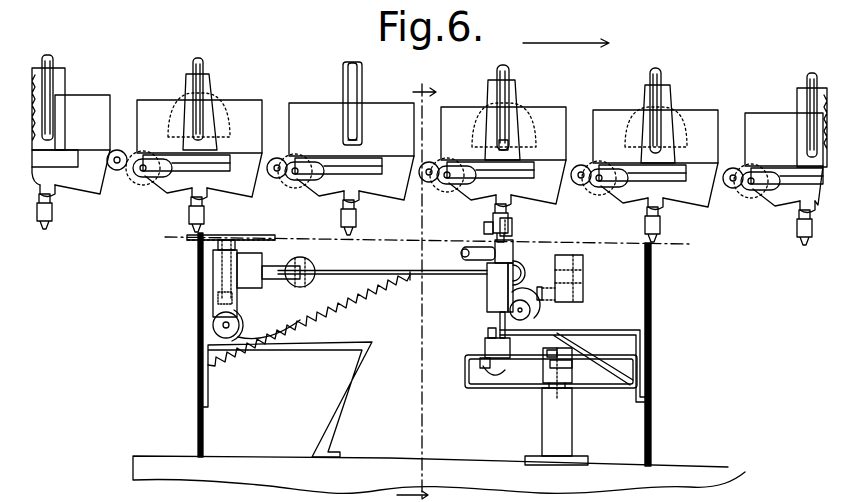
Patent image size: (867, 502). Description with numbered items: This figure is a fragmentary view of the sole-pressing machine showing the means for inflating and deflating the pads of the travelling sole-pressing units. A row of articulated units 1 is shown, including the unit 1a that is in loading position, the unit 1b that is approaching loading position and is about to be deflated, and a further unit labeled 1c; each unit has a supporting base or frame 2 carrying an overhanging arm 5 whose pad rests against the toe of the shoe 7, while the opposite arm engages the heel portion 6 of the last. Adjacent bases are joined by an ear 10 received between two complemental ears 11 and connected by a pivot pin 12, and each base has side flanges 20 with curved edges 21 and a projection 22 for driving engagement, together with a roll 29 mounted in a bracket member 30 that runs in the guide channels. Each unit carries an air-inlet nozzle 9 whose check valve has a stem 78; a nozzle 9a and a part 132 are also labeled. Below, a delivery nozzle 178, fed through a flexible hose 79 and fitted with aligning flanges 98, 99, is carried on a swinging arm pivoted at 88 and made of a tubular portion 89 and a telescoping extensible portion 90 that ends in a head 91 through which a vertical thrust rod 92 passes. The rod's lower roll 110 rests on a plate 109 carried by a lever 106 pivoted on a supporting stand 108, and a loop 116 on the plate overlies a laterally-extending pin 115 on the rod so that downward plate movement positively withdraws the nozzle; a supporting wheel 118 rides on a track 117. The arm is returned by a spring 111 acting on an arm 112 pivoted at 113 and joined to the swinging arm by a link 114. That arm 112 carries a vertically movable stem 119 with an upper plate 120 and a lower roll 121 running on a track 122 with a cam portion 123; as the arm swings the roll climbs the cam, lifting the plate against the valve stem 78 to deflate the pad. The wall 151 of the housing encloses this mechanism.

The sole-pressing unit 1 is at (240, 102).
The sole-pressing unit in loading position 1a is at (562, 113).
The sole-pressing unit approaching loading position 1b is at (228, 103).
The carrier box 1c is at (370, 108).
The supporting base or frame 2 is at (763, 150).
The overhanging arm 5 is at (203, 67).
The heel portion of last 6 is at (58, 82).
The shoe 7 is at (166, 237).
The air-inlet nozzle 9 is at (52, 217).
The nozzle 9a is at (492, 220).
The ear 10 is at (282, 163).
The complemental ears 11 is at (288, 152).
The pivot pin 12 is at (277, 160).
The flange 20 is at (165, 190).
The flange edge 21 is at (170, 192).
The projection 22 is at (192, 193).
The roll 29 is at (137, 181).
The bracket member 30 is at (225, 160).
The valve stem 78 is at (199, 244).
The flexible hose 79 is at (470, 256).
The pivot 88 is at (584, 258).
The tubular portion 89 is at (584, 284).
The extensible portion 90 is at (522, 270).
The head 91 is at (488, 285).
The thrust rod 92 is at (497, 315).
The aligning flange 98 is at (512, 231).
The aligning flange 99 is at (484, 231).
The lever 106 is at (545, 380).
The supporting stand 108 is at (546, 433).
The plate 109 is at (545, 385).
The roll 110 is at (505, 382).
The spring 111 is at (345, 313).
The arm 112 is at (258, 275).
The pivot 113 is at (302, 262).
The link 114 is at (382, 265).
The laterally-extending pin 115 is at (467, 368).
The loop 116 is at (486, 348).
The track or support 117 is at (582, 332).
The supporting wheel 118 is at (532, 312).
The stem 119 is at (216, 246).
The plate 120 is at (246, 240).
The roll 121 is at (242, 321).
The track 122 is at (322, 342).
The cam portion 123 is at (266, 335).
The arm 132 is at (212, 168).
The housing wall 151 is at (652, 418).
The delivery nozzle 178 is at (509, 253).